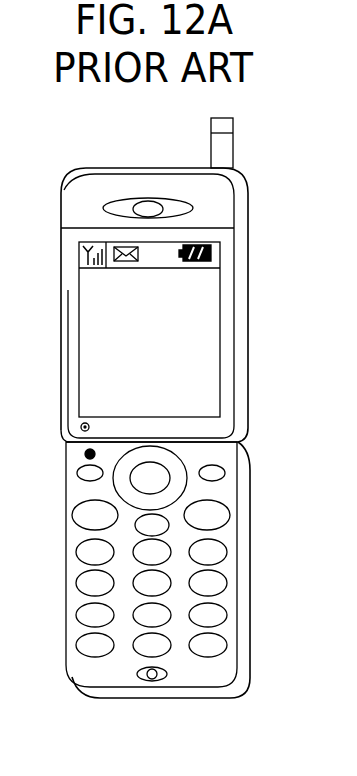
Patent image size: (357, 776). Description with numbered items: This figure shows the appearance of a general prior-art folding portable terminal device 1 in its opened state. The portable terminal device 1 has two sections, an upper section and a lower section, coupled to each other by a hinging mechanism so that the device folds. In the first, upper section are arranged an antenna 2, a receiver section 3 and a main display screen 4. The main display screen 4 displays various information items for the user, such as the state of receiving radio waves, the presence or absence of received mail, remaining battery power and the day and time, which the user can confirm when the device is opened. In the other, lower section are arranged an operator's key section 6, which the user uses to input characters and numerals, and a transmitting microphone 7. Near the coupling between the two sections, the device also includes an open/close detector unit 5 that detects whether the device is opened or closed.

The portable terminal device 1 is at (225, 497).
The antenna 2 is at (225, 150).
The receiver section 3 is at (148, 201).
The main display screen 4 is at (90, 292).
The open/close detector unit 5 is at (85, 454).
The operator's key section 6 is at (213, 582).
The transmitting microphone 7 is at (152, 682).